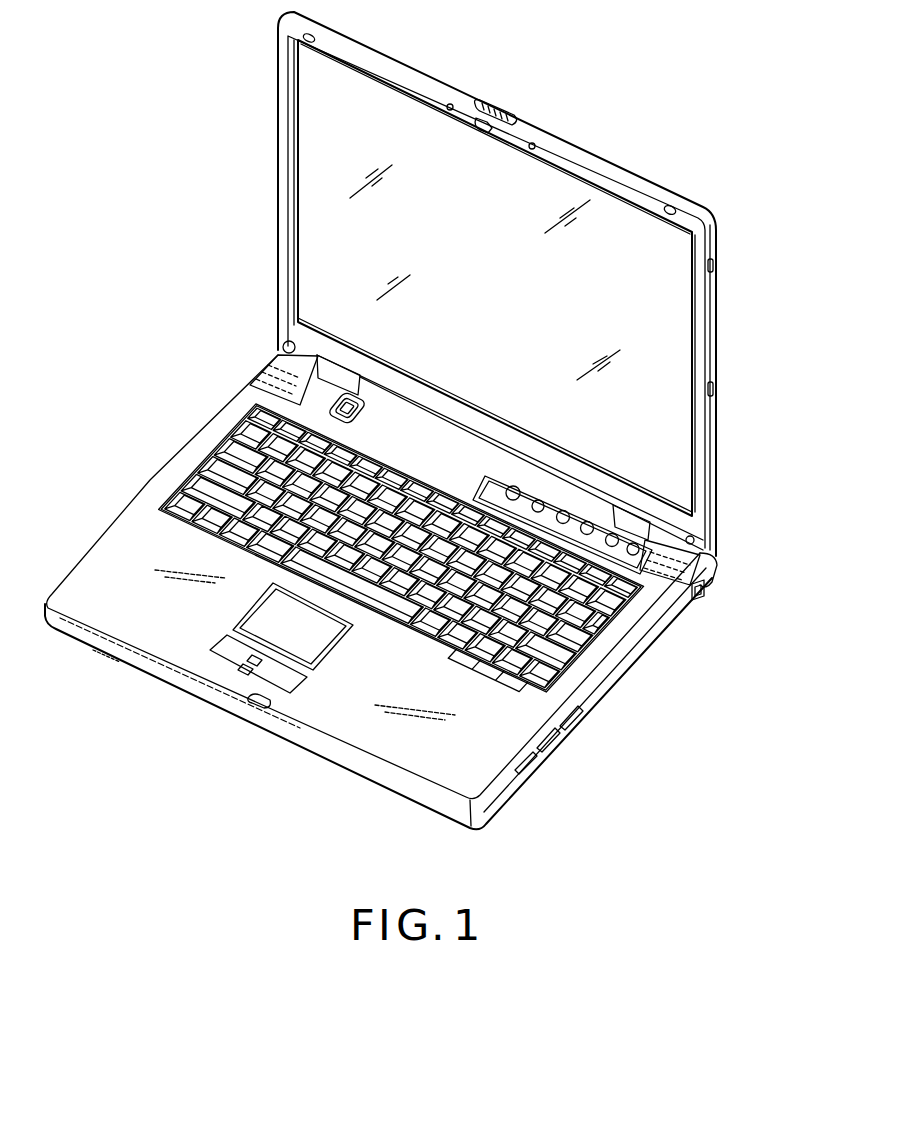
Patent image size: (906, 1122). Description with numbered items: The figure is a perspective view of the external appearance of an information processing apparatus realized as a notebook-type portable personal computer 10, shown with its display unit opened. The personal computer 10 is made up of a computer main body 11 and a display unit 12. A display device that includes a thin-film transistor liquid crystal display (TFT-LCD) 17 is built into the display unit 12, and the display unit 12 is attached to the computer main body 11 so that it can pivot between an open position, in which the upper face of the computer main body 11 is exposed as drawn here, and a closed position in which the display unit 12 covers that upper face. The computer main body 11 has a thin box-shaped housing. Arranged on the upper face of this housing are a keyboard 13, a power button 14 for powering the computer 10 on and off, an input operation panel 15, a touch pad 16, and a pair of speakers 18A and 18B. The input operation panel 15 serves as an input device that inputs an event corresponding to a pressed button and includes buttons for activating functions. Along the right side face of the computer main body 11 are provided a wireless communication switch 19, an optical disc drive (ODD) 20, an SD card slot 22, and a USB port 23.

The portable personal computer 10 is at (415, 428).
The computer main body 11 is at (415, 558).
The display unit 12 is at (531, 284).
The keyboard 13 is at (533, 648).
The power button 14 is at (335, 397).
The input operation panel 15 is at (580, 520).
The touch pad 16 is at (265, 627).
The thin-film transistor liquid crystal display (TFT-LCD) 17 is at (672, 301).
The speaker 18A is at (272, 358).
The speaker 18B is at (705, 558).
The wireless communication switch 19 is at (703, 592).
The optical disc drive (ODD) 20 is at (645, 640).
The SD card slot 22 is at (525, 773).
The USB port 23 is at (548, 752).